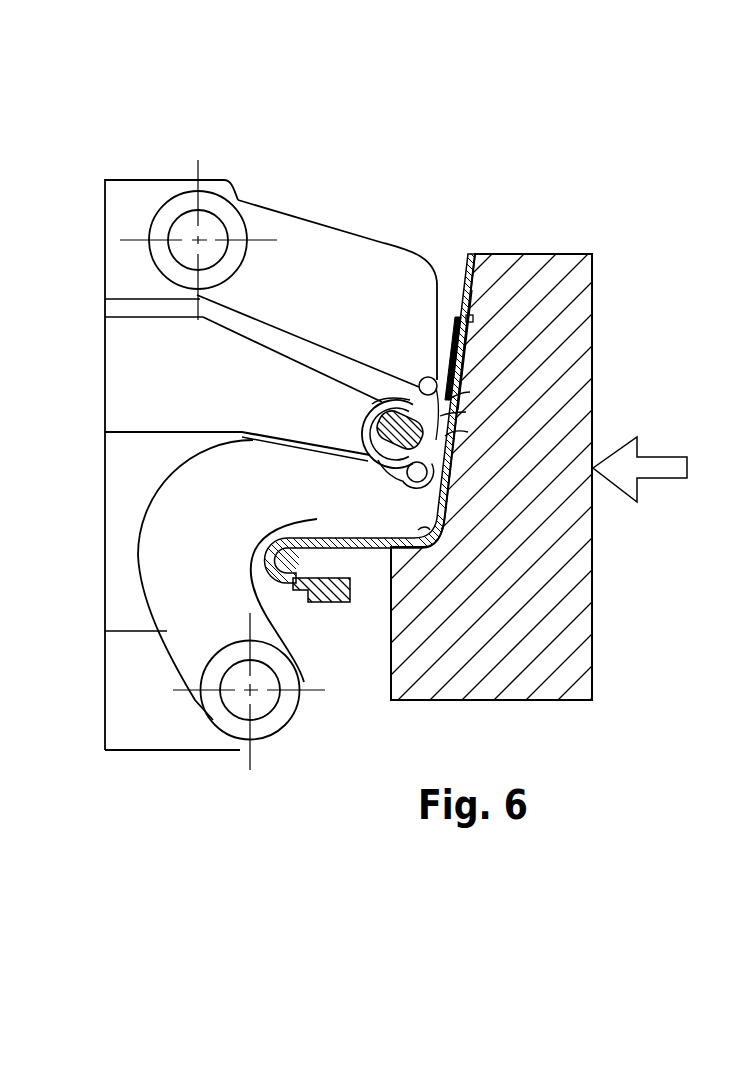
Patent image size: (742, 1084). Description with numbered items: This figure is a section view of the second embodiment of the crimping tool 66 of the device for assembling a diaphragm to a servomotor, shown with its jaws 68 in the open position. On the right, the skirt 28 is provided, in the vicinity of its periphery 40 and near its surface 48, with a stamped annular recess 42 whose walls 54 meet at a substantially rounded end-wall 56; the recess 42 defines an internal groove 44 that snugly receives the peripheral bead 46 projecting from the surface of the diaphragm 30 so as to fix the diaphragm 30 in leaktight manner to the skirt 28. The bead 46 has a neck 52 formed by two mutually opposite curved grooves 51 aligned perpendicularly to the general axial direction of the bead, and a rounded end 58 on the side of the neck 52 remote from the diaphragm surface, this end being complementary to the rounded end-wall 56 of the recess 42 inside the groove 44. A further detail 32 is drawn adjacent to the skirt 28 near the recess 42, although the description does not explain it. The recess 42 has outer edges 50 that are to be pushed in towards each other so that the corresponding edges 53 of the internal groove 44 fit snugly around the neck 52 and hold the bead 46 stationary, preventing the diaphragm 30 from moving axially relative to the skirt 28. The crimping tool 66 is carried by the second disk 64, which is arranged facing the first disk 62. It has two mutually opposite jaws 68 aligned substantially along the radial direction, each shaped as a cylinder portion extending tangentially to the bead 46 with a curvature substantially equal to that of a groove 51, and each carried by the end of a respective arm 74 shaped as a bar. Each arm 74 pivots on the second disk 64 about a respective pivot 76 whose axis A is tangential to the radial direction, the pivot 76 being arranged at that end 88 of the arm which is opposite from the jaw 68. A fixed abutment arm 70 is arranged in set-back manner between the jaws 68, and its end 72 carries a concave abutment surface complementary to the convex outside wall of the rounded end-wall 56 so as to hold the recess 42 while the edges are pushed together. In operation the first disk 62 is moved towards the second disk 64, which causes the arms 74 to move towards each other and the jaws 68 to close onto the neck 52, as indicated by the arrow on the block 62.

The skirt 28 is at (462, 256).
The diaphragm 30 is at (472, 352).
The plate edge 32 is at (472, 345).
The periphery 40 is at (346, 601).
The stamped annular recess 42 is at (376, 390).
The internal groove 44 is at (440, 450).
The peripheral bead 46 is at (395, 470).
The surface of the skirt 48 is at (470, 274).
The outer edges 50 is at (412, 382).
The curved grooves 51 is at (447, 433).
The neck 52 is at (427, 540).
The edges of the internal groove 53 is at (443, 415).
The walls of the recess 54 is at (381, 398).
The rounded end-wall 56 is at (360, 428).
The rounded end 58 is at (368, 456).
The first disk 62 is at (558, 657).
The second disk 64 is at (105, 203).
The crimping tool 66 is at (218, 141).
The jaws 68 is at (450, 400).
The fixed abutment arm 70 is at (158, 362).
The end of the abutment arm 72 is at (348, 412).
The arm 74 is at (303, 277).
The pivot 76 is at (185, 225).
The end of the arm 88 is at (260, 227).
The pivot axis A is at (200, 240).